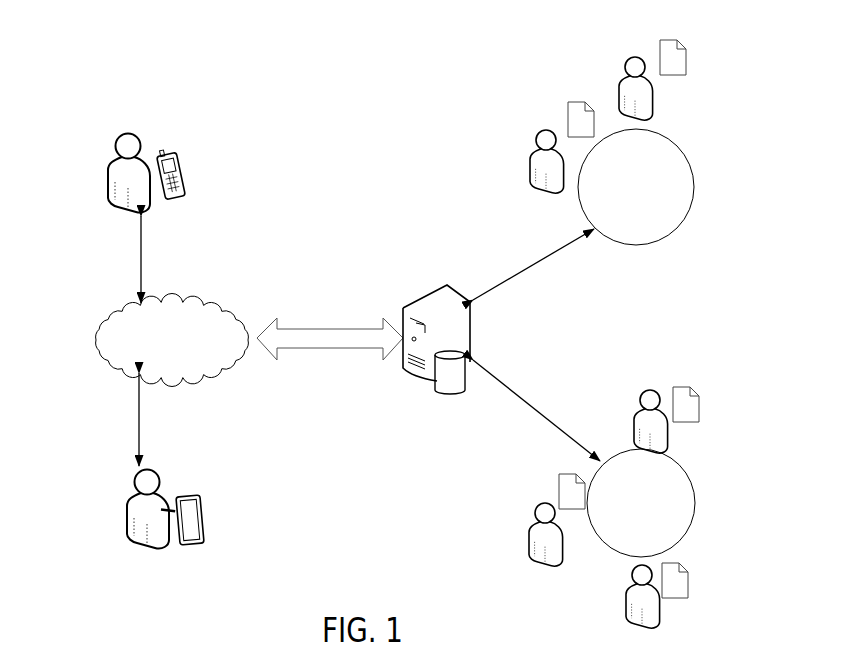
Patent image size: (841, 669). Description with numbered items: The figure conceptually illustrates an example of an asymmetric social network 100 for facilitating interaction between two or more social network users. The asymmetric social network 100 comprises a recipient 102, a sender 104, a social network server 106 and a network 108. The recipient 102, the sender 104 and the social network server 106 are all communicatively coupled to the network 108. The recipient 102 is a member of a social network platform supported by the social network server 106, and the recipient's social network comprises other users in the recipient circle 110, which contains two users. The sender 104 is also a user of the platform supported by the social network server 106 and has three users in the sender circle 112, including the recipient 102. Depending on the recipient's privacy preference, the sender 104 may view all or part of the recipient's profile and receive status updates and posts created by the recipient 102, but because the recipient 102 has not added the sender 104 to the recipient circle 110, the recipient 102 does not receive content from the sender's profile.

The asymmetric social network 100 is at (362, 89).
The recipient 102 is at (132, 127).
The sender 104 is at (124, 508).
The social network server 106 is at (449, 285).
The network 108 is at (176, 300).
The recipient circle 110 is at (683, 149).
The sender circle 112 is at (695, 487).